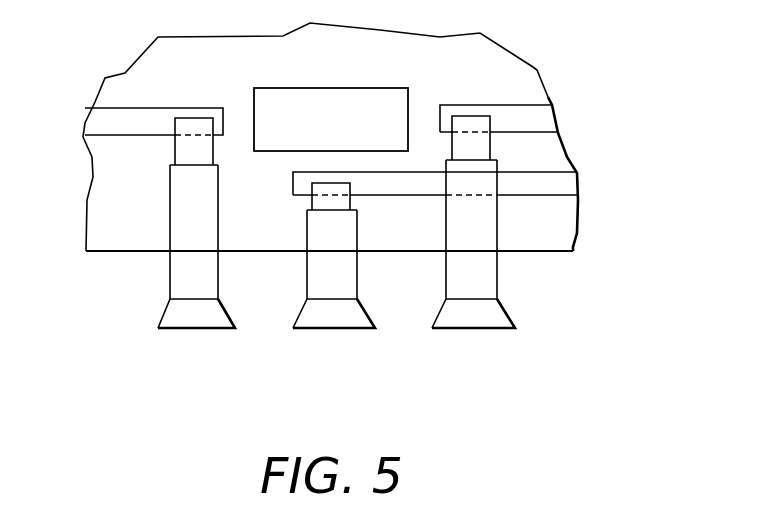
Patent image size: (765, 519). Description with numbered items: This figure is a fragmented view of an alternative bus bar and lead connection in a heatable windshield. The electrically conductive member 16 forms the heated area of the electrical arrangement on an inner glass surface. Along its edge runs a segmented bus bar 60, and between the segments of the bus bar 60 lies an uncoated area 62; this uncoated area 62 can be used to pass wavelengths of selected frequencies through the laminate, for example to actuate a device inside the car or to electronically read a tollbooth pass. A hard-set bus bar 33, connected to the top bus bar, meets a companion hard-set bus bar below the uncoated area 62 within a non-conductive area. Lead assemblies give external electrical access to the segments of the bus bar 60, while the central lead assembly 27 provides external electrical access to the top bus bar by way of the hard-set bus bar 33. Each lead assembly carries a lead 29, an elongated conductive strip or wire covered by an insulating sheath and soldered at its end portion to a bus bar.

The electrically conductive member 16 is at (158, 68).
The uncoated area 62 is at (340, 102).
The bus bar 60 is at (130, 122).
The hard-set bus bar 33 is at (402, 187).
The lead 29 is at (145, 285).
The lead assembly 27 is at (318, 345).